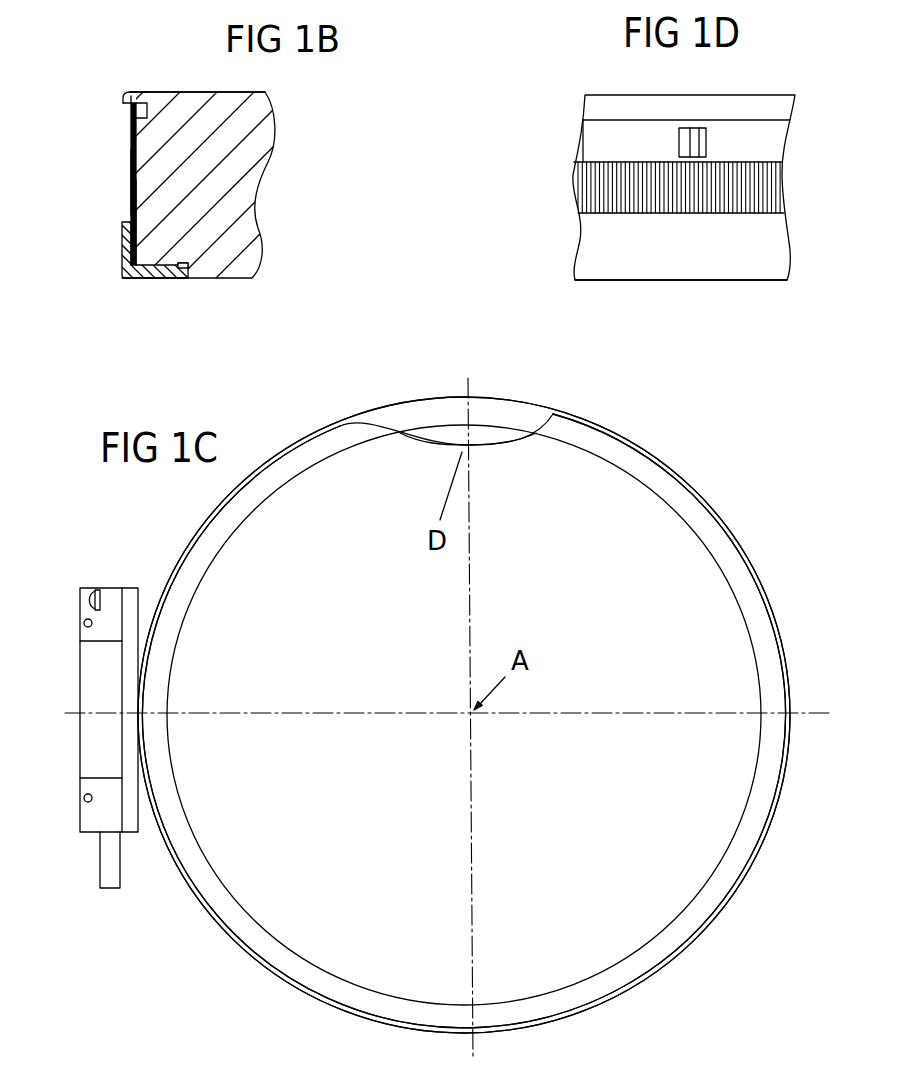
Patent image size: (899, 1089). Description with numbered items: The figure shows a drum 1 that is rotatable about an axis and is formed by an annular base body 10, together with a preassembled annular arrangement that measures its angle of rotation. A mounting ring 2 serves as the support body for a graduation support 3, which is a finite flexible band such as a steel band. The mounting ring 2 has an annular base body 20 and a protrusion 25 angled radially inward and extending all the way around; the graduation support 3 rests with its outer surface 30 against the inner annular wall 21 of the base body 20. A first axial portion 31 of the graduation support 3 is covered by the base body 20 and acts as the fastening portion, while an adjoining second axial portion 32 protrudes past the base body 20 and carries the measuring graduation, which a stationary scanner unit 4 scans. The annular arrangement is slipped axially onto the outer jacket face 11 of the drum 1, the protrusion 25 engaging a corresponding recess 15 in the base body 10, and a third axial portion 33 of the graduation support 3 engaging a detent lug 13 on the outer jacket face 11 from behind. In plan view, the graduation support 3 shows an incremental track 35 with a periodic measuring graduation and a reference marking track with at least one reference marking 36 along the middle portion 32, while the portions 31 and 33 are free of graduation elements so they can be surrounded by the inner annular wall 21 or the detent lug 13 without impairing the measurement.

In FIG. 1B, the drum 1 is at (178, 86).
In FIG. 1B, the mounting ring 2 is at (167, 292).
In FIG. 1C, the mounting ring 2 is at (500, 405).
In FIG. 1B, the graduation support 3 is at (122, 137).
In FIG. 1D, the graduation support 3 is at (711, 82).
In FIG. 1C, the graduation support 3 is at (378, 424).
In FIG. 1C, the scanner unit 4 is at (73, 679).
In FIG. 1B, the annular base body 10 is at (253, 233).
In FIG. 1B, the outer jacket face 11 is at (131, 160).
In FIG. 1B, the detent lug 13 is at (131, 91).
In FIG. 1B, the recess 15 is at (183, 272).
In FIG. 1B, the annular base body 20 is at (124, 237).
In FIG. 1C, the annular base body 20 is at (418, 396).
In FIG. 1B, the inner annular wall 21 is at (136, 230).
In FIG. 1C, the inner annular wall 21 is at (560, 412).
In FIG. 1B, the protrusion 25 is at (148, 280).
In FIG. 1C, the protrusion 25 is at (527, 410).
In FIG. 1B, the outer surface 30 is at (135, 228).
In FIG. 1C, the outer surface 30 is at (432, 442).
In FIG. 1B, the first axial portion 31 is at (124, 257).
In FIG. 1D, the first axial portion 31 is at (592, 255).
In FIG. 1B, the second axial portion 32 is at (130, 180).
In FIG. 1D, the second axial portion 32 is at (582, 142).
In FIG. 1B, the third axial portion 33 is at (127, 102).
In FIG. 1D, the third axial portion 33 is at (598, 107).
In FIG. 1D, the incremental track 35 is at (737, 193).
In FIG. 1D, the reference marking 36 is at (702, 137).